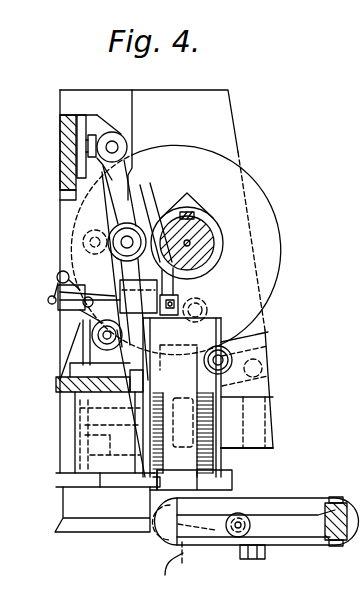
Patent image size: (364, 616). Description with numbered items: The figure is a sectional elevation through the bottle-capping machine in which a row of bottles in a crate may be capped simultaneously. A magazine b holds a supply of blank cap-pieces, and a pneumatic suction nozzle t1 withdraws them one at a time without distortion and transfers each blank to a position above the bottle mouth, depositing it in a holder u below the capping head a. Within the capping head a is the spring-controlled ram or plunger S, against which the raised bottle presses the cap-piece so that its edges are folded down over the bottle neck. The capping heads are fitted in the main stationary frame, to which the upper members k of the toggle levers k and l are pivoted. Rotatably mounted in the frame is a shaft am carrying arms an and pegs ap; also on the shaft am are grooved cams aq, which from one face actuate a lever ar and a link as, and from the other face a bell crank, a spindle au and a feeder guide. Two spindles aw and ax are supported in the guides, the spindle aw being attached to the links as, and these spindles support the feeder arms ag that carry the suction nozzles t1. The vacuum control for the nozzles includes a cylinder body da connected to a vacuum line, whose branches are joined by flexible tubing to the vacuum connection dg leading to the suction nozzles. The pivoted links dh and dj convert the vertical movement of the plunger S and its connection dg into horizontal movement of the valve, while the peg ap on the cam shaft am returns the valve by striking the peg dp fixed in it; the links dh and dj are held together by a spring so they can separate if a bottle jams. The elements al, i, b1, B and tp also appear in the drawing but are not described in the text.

The pivot lug al is at (92, 133).
The upper member of toggle lever k is at (125, 270).
The peg ap is at (140, 324).
The arm an is at (190, 208).
The grooved cam aq is at (277, 227).
The shaft am is at (190, 247).
The lever ar is at (85, 232).
The link dh is at (68, 277).
The link dj is at (56, 294).
The lower member of toggle lever l is at (58, 299).
The vacuum connection dg is at (78, 308).
The peg dp is at (203, 312).
The cylinder body da is at (115, 343).
The ram or plunger S is at (107, 432).
The capping head a is at (73, 446).
The holder u is at (82, 525).
The post i is at (103, 482).
The threaded rod b1 is at (191, 397).
The rail B is at (213, 452).
The magazine b is at (213, 481).
The spindle au is at (255, 466).
The pneumatic suction nozzle t1 is at (172, 503).
The spindle aw is at (250, 516).
The spindle ax is at (325, 530).
The feeder arm ag is at (205, 532).
The link as is at (193, 558).
The pin tp is at (161, 573).